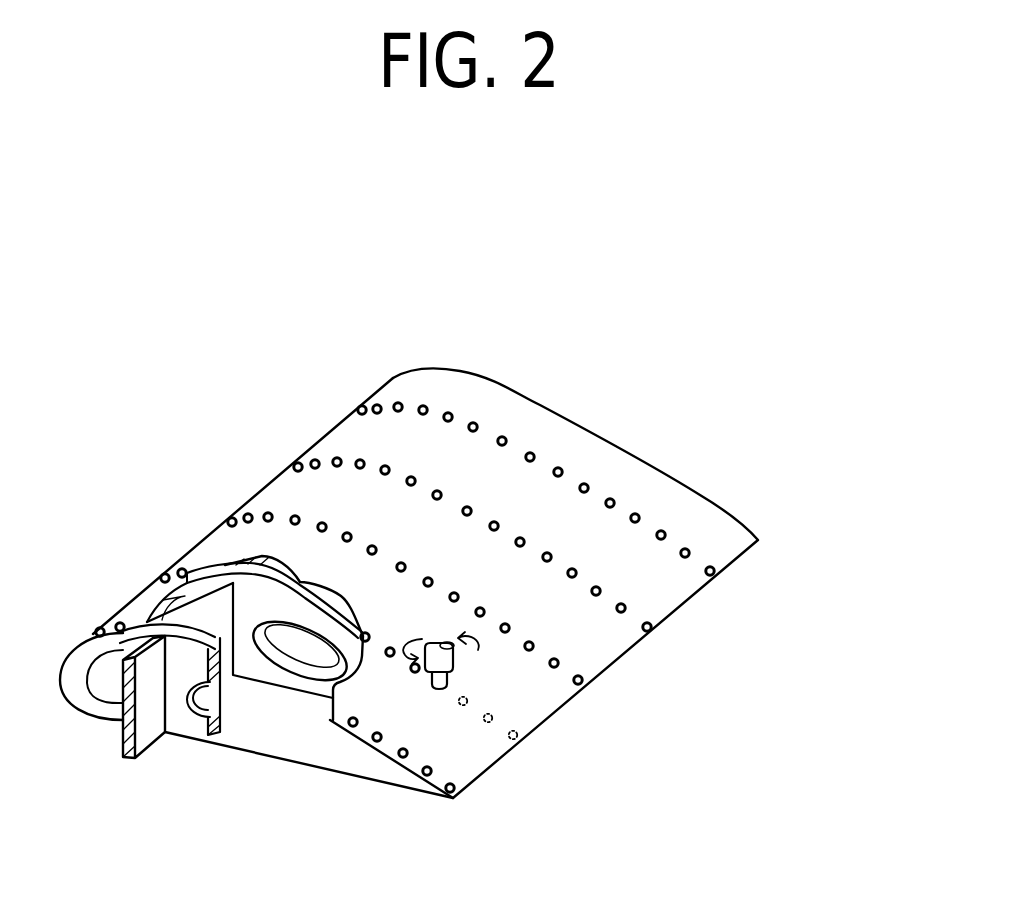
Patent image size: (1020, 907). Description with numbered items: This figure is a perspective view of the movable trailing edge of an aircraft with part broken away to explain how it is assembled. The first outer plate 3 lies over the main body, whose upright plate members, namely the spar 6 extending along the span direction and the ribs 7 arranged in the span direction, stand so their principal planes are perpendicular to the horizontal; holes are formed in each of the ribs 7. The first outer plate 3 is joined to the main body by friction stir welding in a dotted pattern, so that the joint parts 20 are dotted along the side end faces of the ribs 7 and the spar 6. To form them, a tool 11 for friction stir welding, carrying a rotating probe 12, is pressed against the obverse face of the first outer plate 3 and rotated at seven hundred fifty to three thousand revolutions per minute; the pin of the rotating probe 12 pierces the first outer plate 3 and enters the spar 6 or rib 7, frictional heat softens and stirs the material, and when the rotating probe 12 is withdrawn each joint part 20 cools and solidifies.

The first outer plate 3 is at (727, 567).
The spar 6 is at (150, 731).
The ribs 7 is at (253, 670).
The tool 11 is at (456, 662).
The rotating probe 12 is at (443, 678).
The joint parts 20 is at (410, 668).